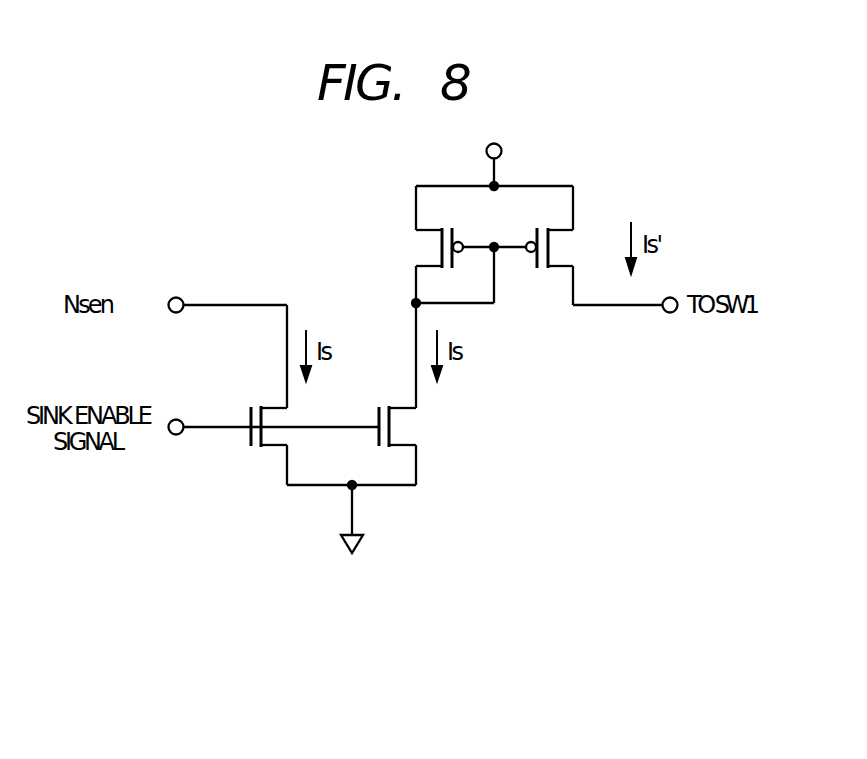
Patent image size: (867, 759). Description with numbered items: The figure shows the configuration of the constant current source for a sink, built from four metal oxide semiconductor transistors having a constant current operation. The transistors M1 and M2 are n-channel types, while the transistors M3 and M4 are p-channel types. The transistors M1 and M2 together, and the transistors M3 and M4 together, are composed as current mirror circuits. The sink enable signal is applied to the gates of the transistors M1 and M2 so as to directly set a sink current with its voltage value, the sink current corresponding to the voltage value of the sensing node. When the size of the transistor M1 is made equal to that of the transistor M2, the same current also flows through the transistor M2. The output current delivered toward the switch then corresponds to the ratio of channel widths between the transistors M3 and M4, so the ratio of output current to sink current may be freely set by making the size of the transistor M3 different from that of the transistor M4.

The transistor M1 is at (266, 443).
The transistor M2 is at (418, 443).
The transistor M3 is at (425, 248).
The transistor M4 is at (562, 248).